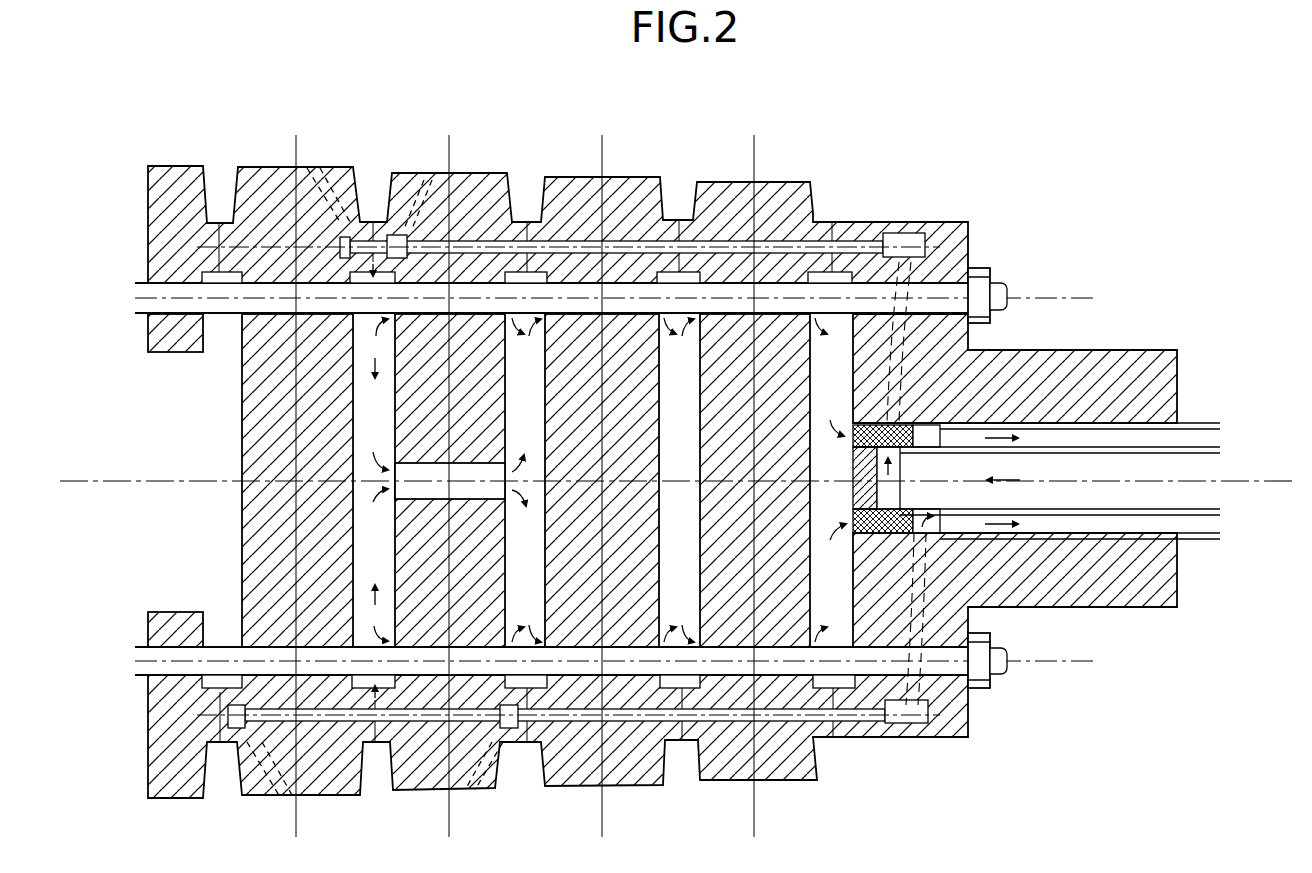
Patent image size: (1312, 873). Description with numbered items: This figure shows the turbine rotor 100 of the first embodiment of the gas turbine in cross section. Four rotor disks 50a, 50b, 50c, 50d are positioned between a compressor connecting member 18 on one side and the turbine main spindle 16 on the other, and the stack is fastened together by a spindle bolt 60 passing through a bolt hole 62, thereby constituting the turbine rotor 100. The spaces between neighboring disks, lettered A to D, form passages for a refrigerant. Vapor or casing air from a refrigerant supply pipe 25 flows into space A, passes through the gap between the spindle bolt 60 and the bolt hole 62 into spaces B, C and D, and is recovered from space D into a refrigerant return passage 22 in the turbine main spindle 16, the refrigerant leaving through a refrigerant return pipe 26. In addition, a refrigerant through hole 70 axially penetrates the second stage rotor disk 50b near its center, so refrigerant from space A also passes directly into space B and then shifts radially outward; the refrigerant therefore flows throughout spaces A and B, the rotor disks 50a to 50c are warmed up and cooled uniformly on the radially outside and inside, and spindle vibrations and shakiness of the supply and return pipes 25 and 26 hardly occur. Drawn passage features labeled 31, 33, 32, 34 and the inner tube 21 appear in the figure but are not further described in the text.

The compressor connecting member 18 is at (172, 181).
The first stage rotor disk 50a is at (273, 170).
The second stage rotor disk 50b is at (478, 180).
The third stage rotor disk 50c is at (575, 185).
The fourth stage rotor disk 50d is at (717, 190).
The inlet passage 31 is at (327, 173).
The inlet passage 33 is at (422, 180).
The outlet passage 32 is at (252, 797).
The outlet passage 34 is at (493, 788).
The refrigerant supply pipe 25 is at (767, 247).
The bolt hole 62 is at (800, 225).
The refrigerant return pipe 26 is at (852, 737).
The spindle bolt 60 is at (935, 280).
The turbine main spindle 16 is at (1133, 370).
The refrigerant return passage 22 is at (1185, 433).
The inner tube 21 is at (1207, 467).
The refrigerant through hole 70 is at (428, 499).
The turbine rotor 100 is at (960, 158).